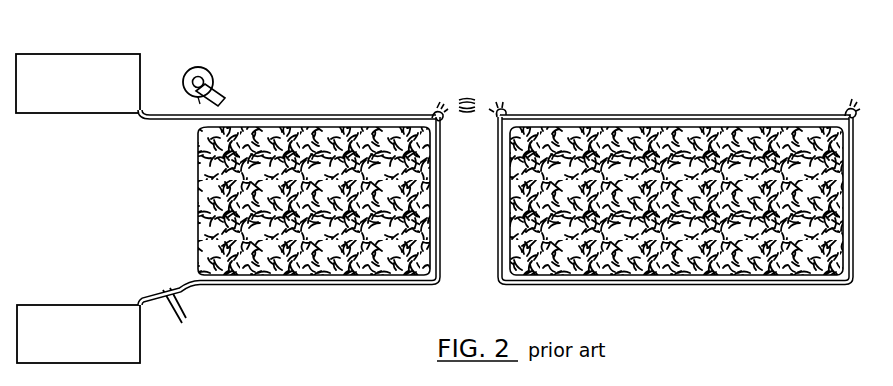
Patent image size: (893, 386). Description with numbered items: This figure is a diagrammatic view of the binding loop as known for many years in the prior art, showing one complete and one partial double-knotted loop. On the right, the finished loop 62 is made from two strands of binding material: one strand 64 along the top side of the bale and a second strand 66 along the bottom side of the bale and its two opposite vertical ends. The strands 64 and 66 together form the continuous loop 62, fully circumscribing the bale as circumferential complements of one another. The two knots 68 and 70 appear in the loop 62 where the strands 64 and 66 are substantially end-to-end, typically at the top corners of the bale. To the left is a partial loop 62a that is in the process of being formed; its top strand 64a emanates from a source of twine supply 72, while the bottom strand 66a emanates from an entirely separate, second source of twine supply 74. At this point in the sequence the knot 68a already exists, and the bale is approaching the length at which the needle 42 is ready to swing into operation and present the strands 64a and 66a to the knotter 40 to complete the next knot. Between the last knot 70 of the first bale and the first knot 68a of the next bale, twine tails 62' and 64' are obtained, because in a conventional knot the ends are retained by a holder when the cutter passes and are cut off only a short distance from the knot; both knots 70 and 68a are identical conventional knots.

The knotter 40 is at (211, 70).
The needle 42 is at (184, 301).
The loop 62 is at (676, 169).
The partial loop 62a is at (338, 98).
The twine tail 62' is at (471, 80).
The top strand 64 is at (675, 96).
The top strand 64a is at (287, 115).
The twine tail 64' is at (471, 137).
The bottom strand 66 is at (722, 285).
The bottom strand 66a is at (336, 285).
The first knot 68 is at (846, 108).
The first knot 68a is at (434, 110).
The last knot 70 is at (506, 110).
The source of twine supply 72 is at (90, 54).
The second source of twine supply 74 is at (93, 305).